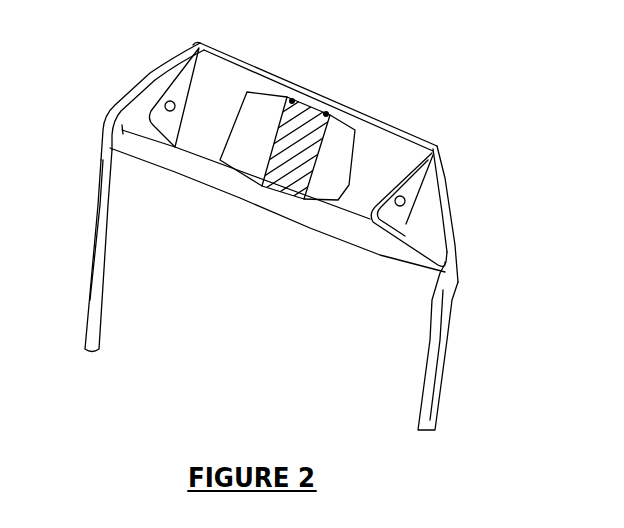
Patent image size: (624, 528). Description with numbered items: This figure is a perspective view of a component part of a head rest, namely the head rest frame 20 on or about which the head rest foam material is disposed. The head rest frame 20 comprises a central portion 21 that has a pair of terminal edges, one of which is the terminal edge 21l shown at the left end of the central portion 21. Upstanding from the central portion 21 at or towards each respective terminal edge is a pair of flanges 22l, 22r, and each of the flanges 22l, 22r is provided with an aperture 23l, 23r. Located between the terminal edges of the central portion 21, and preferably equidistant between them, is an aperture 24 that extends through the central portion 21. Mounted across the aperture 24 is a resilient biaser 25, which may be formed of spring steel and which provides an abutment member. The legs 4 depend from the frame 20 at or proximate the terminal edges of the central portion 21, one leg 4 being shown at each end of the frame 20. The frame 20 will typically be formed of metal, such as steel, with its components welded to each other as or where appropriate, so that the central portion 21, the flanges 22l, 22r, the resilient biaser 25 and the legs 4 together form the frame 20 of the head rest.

The legs 4 is at (90, 270).
The head rest frame 20 is at (220, 87).
The central portion 21 is at (238, 187).
The terminal edge 21l is at (142, 93).
The flange 22l is at (181, 80).
The flange 22r is at (413, 177).
The aperture 23l is at (176, 112).
The aperture 23r is at (402, 207).
The aperture 24 is at (338, 153).
The resilient biaser 25 is at (306, 110).